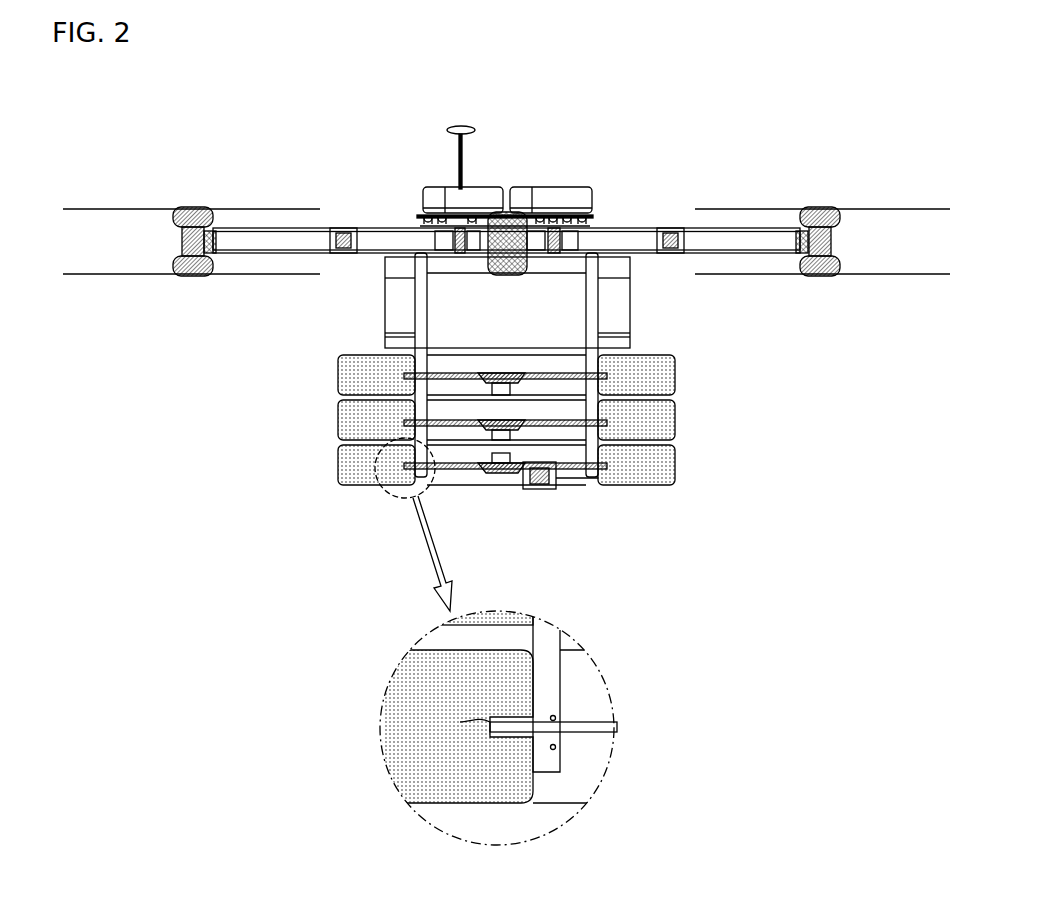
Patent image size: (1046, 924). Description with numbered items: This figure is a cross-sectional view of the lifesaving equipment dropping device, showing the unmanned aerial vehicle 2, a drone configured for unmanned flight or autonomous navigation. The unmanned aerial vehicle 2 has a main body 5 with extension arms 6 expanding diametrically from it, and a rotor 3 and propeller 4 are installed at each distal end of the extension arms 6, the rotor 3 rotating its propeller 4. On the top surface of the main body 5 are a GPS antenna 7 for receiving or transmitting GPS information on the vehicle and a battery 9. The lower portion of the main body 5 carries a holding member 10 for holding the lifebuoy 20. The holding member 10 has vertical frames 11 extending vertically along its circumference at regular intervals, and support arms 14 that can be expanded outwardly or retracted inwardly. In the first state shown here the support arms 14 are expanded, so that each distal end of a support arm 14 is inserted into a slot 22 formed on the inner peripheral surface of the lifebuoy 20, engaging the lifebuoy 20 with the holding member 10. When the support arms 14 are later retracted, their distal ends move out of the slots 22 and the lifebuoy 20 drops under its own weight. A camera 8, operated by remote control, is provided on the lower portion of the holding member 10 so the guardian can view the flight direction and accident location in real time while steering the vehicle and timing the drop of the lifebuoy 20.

The unmanned aerial vehicle 2 is at (401, 152).
The rotor 3 is at (173, 215).
The propeller 4 is at (255, 209).
The main body 5 is at (612, 224).
The extension arm 6 is at (367, 228).
The GPS antenna 7 is at (460, 126).
The camera 8 is at (545, 490).
The battery 9 is at (560, 187).
The holding member 10 is at (591, 498).
The vertical frame 11 is at (598, 322).
The support arm 14 is at (585, 734).
The lifebuoy 20 is at (345, 423).
The slot 22 is at (490, 722).